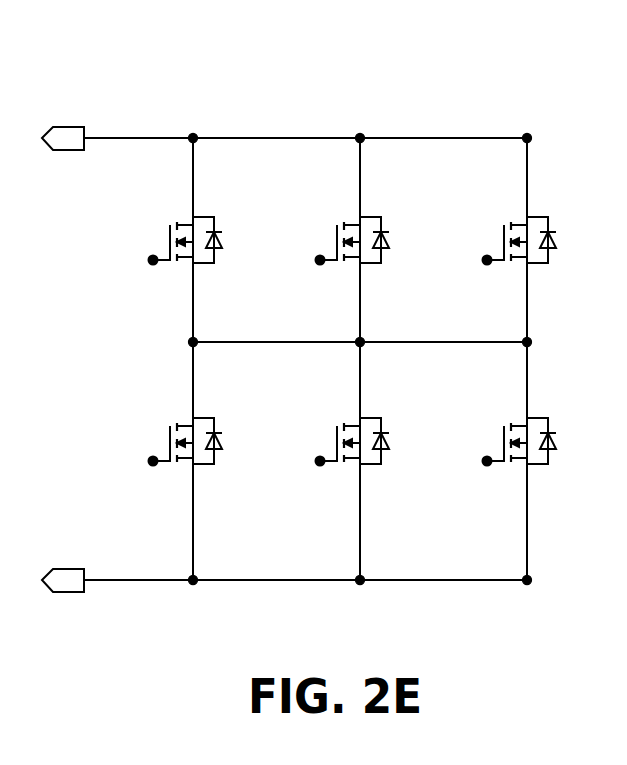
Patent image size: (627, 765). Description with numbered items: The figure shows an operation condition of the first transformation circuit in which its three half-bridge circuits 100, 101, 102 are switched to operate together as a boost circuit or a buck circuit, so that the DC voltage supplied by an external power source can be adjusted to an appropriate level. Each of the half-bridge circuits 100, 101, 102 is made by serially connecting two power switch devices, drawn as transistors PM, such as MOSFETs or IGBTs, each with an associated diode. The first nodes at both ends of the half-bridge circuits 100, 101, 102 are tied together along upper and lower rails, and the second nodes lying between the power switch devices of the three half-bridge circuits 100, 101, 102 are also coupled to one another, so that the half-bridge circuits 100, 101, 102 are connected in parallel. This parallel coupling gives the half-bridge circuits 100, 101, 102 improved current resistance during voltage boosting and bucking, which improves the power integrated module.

The half-bridge circuit 100 is at (219, 115).
The half-bridge circuit 101 is at (381, 113).
The half-bridge circuit 102 is at (548, 113).